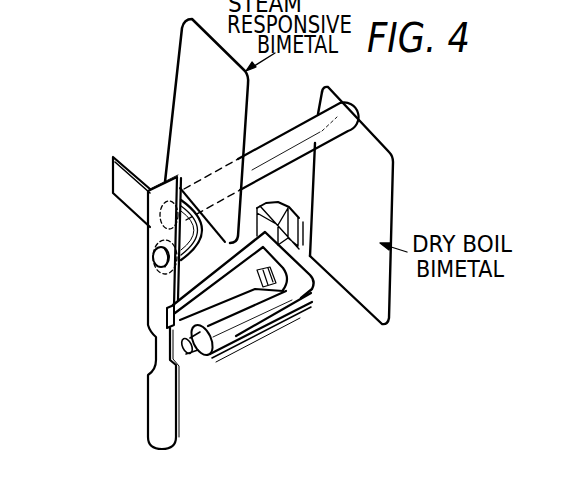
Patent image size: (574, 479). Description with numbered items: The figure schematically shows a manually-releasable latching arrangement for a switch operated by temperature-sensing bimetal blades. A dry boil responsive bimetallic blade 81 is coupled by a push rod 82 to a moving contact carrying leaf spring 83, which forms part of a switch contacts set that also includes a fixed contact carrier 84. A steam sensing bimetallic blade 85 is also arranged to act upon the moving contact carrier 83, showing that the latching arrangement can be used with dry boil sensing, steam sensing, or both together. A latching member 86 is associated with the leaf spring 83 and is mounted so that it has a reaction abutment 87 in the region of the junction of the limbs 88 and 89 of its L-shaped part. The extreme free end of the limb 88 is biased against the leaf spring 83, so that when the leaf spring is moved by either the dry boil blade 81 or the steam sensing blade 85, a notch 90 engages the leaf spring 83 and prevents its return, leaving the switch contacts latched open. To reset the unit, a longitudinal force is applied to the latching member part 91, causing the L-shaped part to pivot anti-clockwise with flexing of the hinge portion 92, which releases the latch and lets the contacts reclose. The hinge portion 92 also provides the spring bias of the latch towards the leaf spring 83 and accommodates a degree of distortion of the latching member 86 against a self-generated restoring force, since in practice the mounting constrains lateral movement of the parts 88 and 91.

The dry boil responsive bimetallic blade 81 is at (381, 170).
The push rod 82 is at (293, 135).
The moving contact carrying leaf spring 83 is at (156, 277).
The fixed contact carrier 84 is at (125, 185).
The steam sensing bimetallic blade 85 is at (187, 47).
The latching member 86 is at (272, 332).
The reaction abutment 87 is at (287, 203).
The limb 88 is at (222, 262).
The limb 89 is at (287, 263).
The notch 90 is at (172, 298).
The latching member part 91 is at (235, 328).
The hinge portion 92 is at (311, 296).